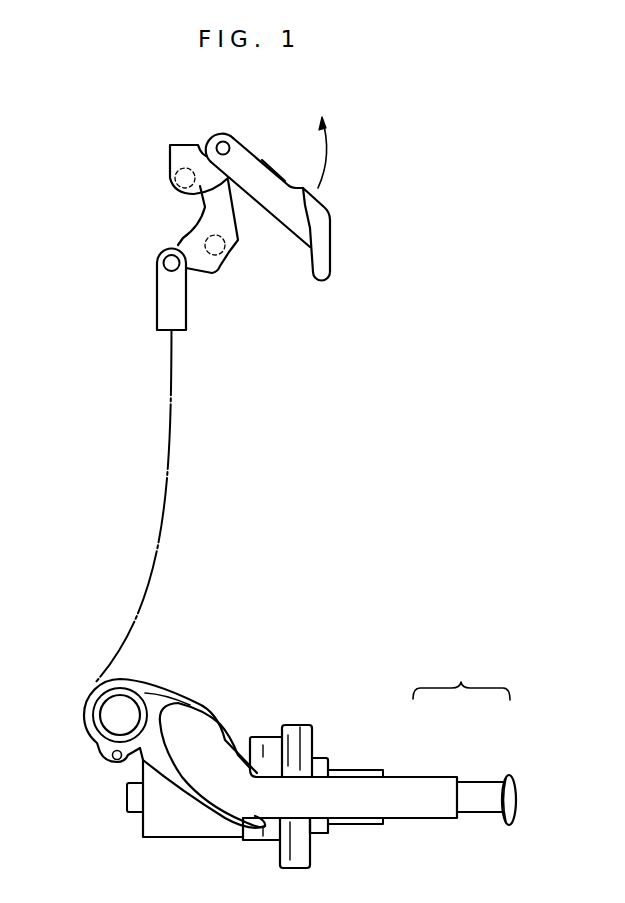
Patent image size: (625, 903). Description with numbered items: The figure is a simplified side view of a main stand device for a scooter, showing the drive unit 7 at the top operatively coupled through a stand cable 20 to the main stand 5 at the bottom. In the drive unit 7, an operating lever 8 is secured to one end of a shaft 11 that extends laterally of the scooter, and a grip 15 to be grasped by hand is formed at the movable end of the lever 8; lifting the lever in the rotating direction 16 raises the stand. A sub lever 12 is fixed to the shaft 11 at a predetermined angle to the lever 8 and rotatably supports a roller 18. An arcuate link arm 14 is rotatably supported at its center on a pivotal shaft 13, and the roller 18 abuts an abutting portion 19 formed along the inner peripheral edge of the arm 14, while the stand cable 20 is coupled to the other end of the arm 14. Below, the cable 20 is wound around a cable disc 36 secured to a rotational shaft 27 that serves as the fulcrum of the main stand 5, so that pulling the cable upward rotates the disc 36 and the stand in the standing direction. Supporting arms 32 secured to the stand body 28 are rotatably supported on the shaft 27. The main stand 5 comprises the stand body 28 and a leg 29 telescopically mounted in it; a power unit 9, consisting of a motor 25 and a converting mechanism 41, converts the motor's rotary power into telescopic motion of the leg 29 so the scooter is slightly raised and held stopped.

The main stand 5 is at (379, 733).
The drive unit 7 is at (285, 190).
The operating lever 8 is at (275, 186).
The power unit 9 is at (293, 707).
The shaft 11 is at (224, 141).
The sub lever 12 is at (177, 183).
The pivotal shaft 13 is at (226, 245).
The link arm 14 is at (199, 274).
The grip 15 is at (329, 272).
The rotating direction 16 is at (330, 158).
The roller 18 is at (176, 188).
The abutting portion 19 is at (217, 226).
The stand cable 20 is at (167, 496).
The motor 25 is at (168, 829).
The rotational shaft 27 is at (105, 716).
The stand body 28 is at (413, 770).
The leg 29 is at (480, 774).
The supporting arm 32 is at (154, 739).
The cable disc 36 is at (132, 685).
The converting mechanism 41 is at (288, 862).